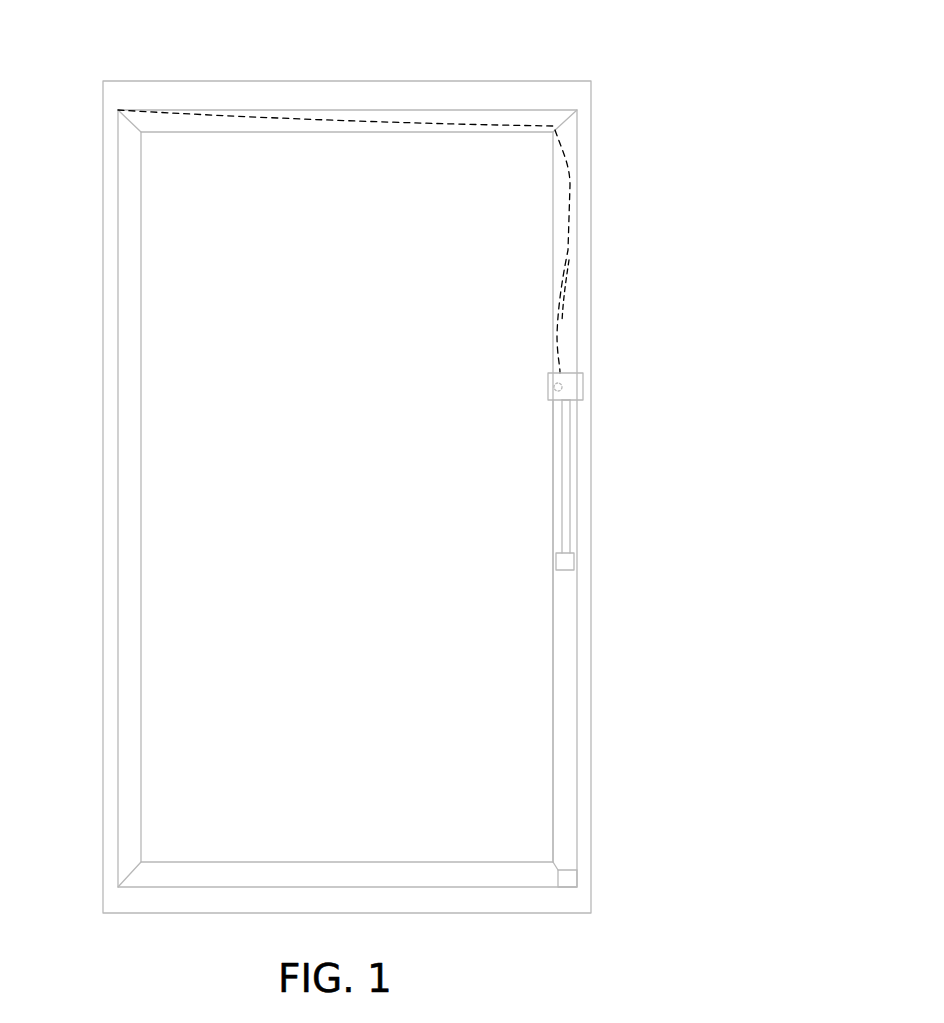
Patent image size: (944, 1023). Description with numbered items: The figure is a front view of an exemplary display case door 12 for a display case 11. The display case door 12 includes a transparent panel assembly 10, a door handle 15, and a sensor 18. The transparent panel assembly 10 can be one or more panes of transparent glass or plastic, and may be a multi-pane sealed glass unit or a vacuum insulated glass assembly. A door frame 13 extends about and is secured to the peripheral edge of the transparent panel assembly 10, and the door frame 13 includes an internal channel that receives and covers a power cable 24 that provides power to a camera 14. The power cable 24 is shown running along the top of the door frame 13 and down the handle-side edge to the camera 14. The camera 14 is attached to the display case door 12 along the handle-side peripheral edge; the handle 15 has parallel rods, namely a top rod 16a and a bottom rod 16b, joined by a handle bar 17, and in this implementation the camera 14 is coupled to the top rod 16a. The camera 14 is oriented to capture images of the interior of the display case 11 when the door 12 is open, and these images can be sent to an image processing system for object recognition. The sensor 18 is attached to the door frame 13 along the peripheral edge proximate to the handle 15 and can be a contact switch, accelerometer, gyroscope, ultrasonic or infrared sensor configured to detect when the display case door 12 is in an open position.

The transparent panel assembly 10 is at (510, 676).
The display case 11 is at (110, 257).
The display case door 12 is at (514, 45).
The door frame 13 is at (553, 126).
The camera 14 is at (583, 390).
The door handle 15 is at (565, 522).
The top rod 16a is at (571, 396).
The bottom rod 16b is at (570, 560).
The handle bar 17 is at (565, 478).
The sensor 18 is at (568, 878).
The power cable 24 is at (562, 147).